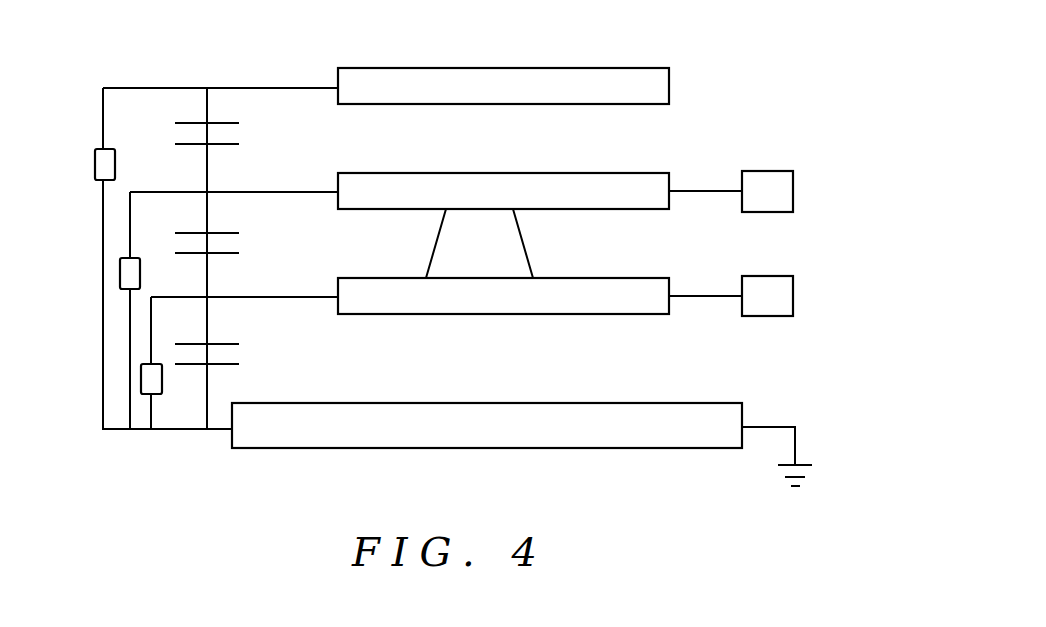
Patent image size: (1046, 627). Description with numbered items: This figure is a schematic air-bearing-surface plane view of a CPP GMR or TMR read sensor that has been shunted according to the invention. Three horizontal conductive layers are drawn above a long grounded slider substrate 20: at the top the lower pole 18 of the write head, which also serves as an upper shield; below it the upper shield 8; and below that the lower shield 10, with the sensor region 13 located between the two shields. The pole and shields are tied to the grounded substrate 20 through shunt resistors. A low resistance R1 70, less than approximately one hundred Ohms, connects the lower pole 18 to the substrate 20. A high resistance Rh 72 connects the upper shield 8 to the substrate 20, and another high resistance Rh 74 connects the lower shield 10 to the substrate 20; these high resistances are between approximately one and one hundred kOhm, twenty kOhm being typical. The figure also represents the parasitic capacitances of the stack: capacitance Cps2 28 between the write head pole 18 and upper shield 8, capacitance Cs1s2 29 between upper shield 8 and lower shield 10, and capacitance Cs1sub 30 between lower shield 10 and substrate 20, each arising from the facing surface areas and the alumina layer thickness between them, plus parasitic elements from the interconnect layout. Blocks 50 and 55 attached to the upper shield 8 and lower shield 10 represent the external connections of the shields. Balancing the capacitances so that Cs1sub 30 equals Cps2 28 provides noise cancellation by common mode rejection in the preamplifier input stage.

The upper shield 8 is at (660, 185).
The lower shield 10 is at (660, 293).
The sample/specimen 13 is at (512, 243).
The lower pole 18 is at (660, 87).
The grounded slider substrate 20 is at (486, 435).
The capacitance Cps2 28 is at (233, 134).
The capacitance Cs1s2 29 is at (233, 243).
The capacitance Cs1sub 30 is at (233, 353).
The measurement unit 50 is at (778, 188).
The measurement unit 55 is at (778, 293).
The low resistance R1 70 is at (106, 166).
The high resistance Rh 72 is at (130, 270).
The high resistance Rh 74 is at (150, 380).